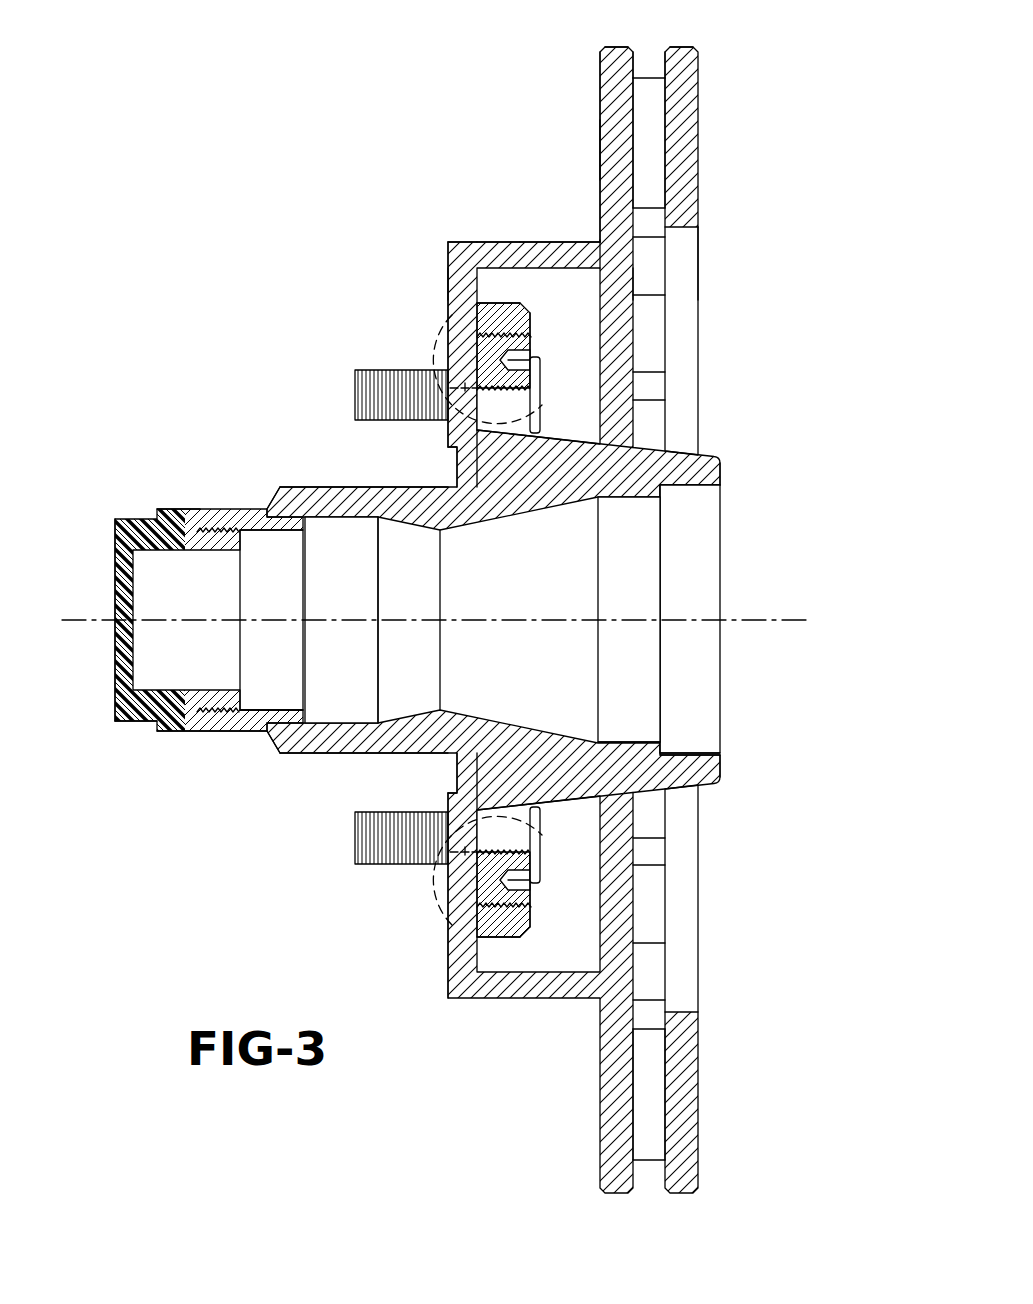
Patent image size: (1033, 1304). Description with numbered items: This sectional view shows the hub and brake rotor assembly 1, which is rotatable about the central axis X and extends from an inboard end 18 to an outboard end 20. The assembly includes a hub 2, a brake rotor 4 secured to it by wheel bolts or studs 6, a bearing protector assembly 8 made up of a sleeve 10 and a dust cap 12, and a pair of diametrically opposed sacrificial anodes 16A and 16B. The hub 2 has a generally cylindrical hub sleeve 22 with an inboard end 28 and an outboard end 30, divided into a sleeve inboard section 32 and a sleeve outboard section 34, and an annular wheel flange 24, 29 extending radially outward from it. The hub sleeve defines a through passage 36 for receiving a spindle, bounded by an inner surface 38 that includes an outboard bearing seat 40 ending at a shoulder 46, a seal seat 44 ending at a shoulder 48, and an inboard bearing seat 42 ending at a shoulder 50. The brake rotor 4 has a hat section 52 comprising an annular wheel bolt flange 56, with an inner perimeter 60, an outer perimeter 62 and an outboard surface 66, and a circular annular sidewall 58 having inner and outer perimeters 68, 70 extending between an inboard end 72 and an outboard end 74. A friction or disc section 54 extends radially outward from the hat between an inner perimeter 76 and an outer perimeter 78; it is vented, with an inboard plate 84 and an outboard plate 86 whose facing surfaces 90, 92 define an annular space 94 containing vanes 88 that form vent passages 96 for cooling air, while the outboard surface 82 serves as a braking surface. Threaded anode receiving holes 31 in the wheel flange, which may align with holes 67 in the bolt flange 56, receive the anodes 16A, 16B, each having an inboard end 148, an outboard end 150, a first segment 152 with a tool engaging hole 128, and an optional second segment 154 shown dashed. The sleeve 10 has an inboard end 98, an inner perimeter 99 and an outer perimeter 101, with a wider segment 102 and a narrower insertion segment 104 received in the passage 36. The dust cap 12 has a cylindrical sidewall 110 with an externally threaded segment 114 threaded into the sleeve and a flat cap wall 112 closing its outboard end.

The hub and brake rotor assembly 1 is at (262, 160).
The hub 2 is at (292, 478).
The brake rotor 4 is at (703, 95).
The wheel bolts or studs 6 is at (360, 395).
The bearing protector assembly 8 is at (170, 639).
The bearing protector or sleeve 10 is at (200, 745).
The dust cap 12 is at (115, 660).
The galvanic or sacrificial anode 16A is at (498, 620).
The galvanic or sacrificial anode 16B is at (535, 902).
The inboard end 18 is at (730, 548).
The outboard end 20 is at (105, 630).
The hub sleeve 22 is at (723, 458).
The annular wheel flange 24 is at (499, 242).
The rotor mounting face 29 is at (497, 303).
The inboard end of hub sleeve 28 is at (722, 478).
The outboard end of hub sleeve 30 is at (266, 505).
The anode receiving holes 31 is at (477, 335).
The sleeve inboard section 32 is at (618, 440).
The sleeve outboard section 34 is at (318, 488).
The through passage 36 is at (575, 668).
The inner perimeter or surface 38 is at (736, 736).
The seal seat 44 is at (672, 752).
The outboard bearing seat 40 is at (330, 518).
The inboard bearing seat 42 is at (635, 740).
The shoulder 46 is at (372, 520).
The shoulder 48 is at (665, 490).
The shoulder 50 is at (605, 499).
The hat or hat section 52 is at (372, 620).
The annular wheel bolt flange 56 is at (446, 296).
The friction section or disc section 54 is at (742, 617).
The inboard plate or disc 84 is at (704, 62).
The circular annular sidewall 58 is at (559, 230).
The outer perimeter of sidewall 70 is at (555, 242).
The inner perimeter of bolt flange 60 is at (452, 460).
The outer perimeter of bolt flange 62 is at (470, 242).
The outboard surface of bolt flange 66 is at (449, 278).
The anode receiving holes 67 is at (530, 418).
The inner perimeter of sidewall 68 is at (530, 270).
The inboard end of sidewall 72 is at (633, 278).
The outboard end of sidewall 74 is at (450, 252).
The inner perimeter of disc section 76 is at (688, 232).
The outer perimeter of disc section 78 is at (684, 48).
The outboard surface 82 is at (600, 142).
The outboard plate or disc 86 is at (598, 72).
The vanes 88 is at (654, 152).
The inboard surface of plate 84 90 is at (642, 52).
The outboard surface of plate 86 92 is at (652, 62).
The annular circular space 94 is at (655, 335).
The vent passage 96 is at (647, 105).
The inboard end of sleeve 98 is at (255, 690).
The inner perimeter of sleeve 99 is at (266, 532).
The outer perimeter of sleeve 101 is at (175, 512).
The wider segment 102 is at (222, 733).
The narrower segment 104 is at (288, 753).
The cylindrical sidewall 110 is at (133, 725).
The flat circular cap wall 112 is at (118, 568).
The externally threaded segment 114 is at (212, 545).
The tool engaging hole 128 is at (540, 362).
The inboard end of anode 148 is at (542, 382).
The outboard end of anode 150 is at (477, 362).
The first segment 152 is at (515, 390).
The second segment 154 is at (452, 313).